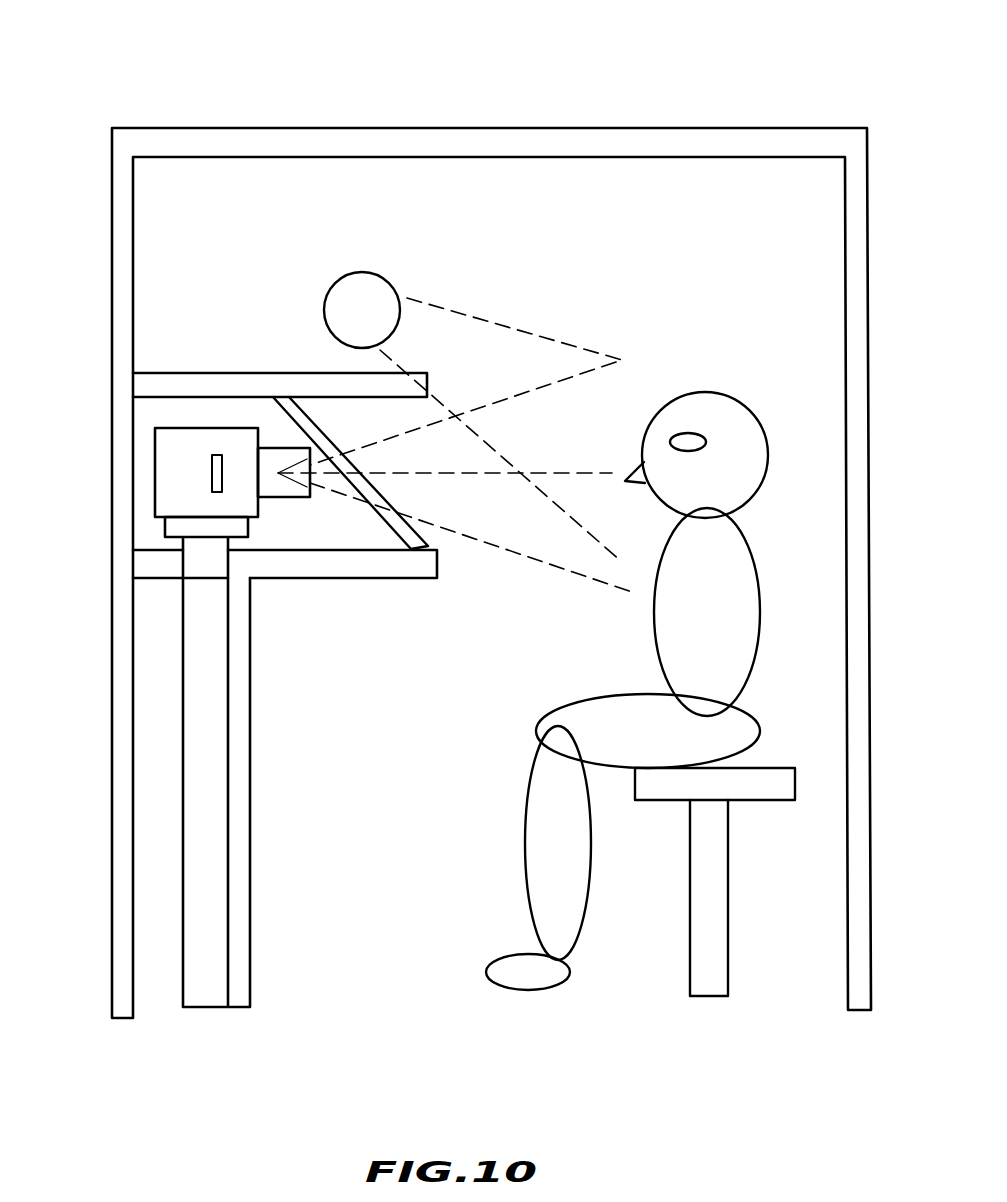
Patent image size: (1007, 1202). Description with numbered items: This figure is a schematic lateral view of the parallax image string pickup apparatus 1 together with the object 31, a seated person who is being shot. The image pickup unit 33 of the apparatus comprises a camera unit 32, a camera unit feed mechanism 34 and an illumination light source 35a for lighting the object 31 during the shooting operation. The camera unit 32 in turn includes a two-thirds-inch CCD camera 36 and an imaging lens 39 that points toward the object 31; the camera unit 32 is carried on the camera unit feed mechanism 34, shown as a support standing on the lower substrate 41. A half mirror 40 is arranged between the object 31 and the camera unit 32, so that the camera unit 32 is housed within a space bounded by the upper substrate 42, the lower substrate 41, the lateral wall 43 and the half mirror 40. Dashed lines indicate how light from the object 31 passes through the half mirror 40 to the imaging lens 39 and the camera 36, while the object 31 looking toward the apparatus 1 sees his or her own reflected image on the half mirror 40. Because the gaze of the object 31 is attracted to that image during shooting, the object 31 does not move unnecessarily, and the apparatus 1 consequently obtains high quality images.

The parallax image string pickup apparatus 1 is at (537, 110).
The object 31 is at (735, 567).
The camera unit 32 is at (266, 511).
The image pickup unit 33 is at (454, 595).
The camera unit feed mechanism 34 is at (212, 532).
The illumination light source 35a is at (378, 290).
The CCD camera 36 is at (190, 443).
The imaging lens 39 is at (271, 457).
The half mirror 40 is at (408, 535).
The lower substrate 41 is at (162, 567).
The upper substrate 42 is at (155, 380).
The lateral wall 43 is at (130, 418).